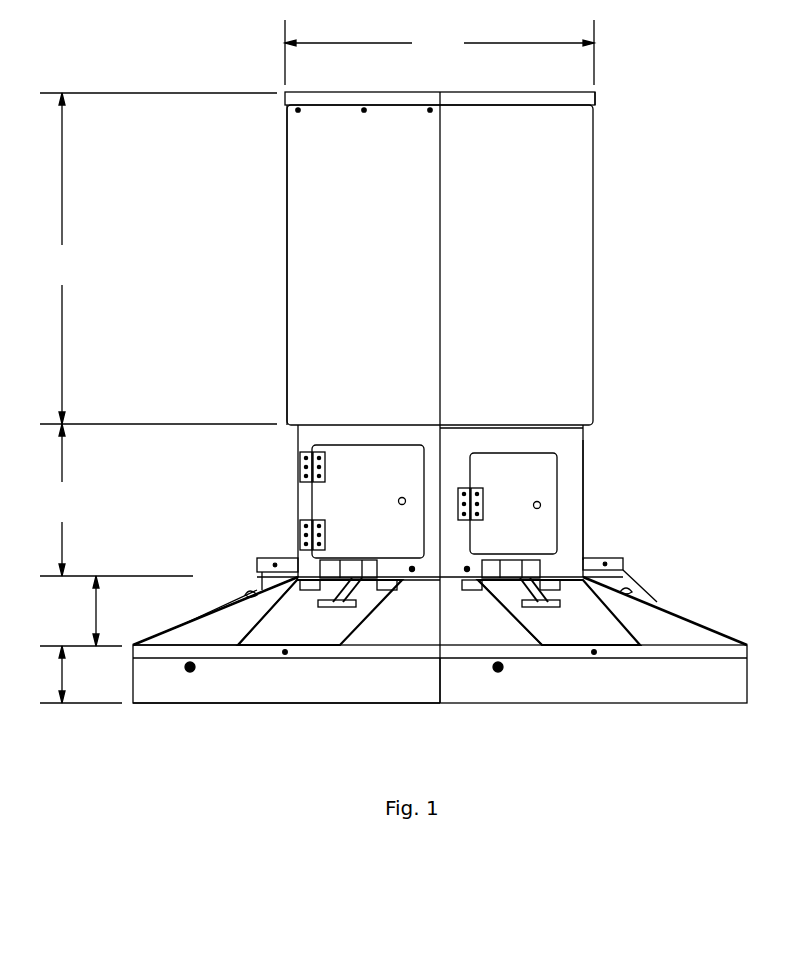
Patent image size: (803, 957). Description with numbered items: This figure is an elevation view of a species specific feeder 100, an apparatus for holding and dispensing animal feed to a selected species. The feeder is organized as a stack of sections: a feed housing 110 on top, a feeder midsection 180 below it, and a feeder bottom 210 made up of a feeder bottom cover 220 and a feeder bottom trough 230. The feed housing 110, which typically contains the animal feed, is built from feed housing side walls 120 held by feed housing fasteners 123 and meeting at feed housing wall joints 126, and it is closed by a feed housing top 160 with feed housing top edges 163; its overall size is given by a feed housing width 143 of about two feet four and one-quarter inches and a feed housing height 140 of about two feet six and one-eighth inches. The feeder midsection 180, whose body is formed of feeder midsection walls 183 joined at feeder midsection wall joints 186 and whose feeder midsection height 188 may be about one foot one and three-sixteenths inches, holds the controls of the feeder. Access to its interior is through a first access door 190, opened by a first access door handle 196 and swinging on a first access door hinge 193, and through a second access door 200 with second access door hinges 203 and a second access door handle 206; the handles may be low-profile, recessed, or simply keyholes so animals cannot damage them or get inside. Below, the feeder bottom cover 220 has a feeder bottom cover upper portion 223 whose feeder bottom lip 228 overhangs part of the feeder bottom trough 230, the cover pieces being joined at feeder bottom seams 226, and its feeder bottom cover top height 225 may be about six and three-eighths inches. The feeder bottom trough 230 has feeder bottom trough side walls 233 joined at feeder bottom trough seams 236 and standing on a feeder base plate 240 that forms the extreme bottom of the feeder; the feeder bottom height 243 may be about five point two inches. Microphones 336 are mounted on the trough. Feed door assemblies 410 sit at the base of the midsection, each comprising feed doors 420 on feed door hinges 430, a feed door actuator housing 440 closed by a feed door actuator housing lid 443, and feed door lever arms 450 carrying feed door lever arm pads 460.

The species specific feeder 100 is at (404, 265).
The feed housing 110 is at (404, 265).
The feed housing side walls 120 is at (286, 350).
The feed housing fasteners 123 is at (298, 112).
The feed housing wall joints 126 is at (441, 215).
The feed housing height 140 is at (158, 258).
The feed housing width 143 is at (439, 52).
The feed housing top 160 is at (462, 105).
The feed housing top edges 163 is at (594, 97).
The feeder midsection 180 is at (544, 501).
The feeder midsection walls 183 is at (560, 437).
The feeder midsection wall joints 186 is at (584, 463).
The feeder midsection height 188 is at (116, 500).
The first access door 190 is at (513, 503).
The first access door hinge 193 is at (462, 487).
The first access door handle 196 is at (534, 508).
The second access door 200 is at (368, 501).
The second access door hinges 203 is at (327, 470).
The second access door handle 206 is at (400, 505).
The feeder bottom 210 is at (205, 622).
The feeder bottom cover 220 is at (338, 612).
The feeder bottom cover upper portion 223 is at (215, 611).
The feeder bottom cover top height 225 is at (92, 614).
The feeder bottom seams 226 is at (440, 628).
The feeder bottom lip 228 is at (285, 655).
The feeder bottom trough 230 is at (440, 674).
The feeder bottom trough side walls 233 is at (213, 700).
The feeder bottom trough seams 236 is at (440, 684).
The feeder base plate 240 is at (300, 703).
The feeder bottom height 243 is at (87, 672).
The microphones 336 is at (190, 672).
The feed door assemblies 410 is at (516, 627).
The feed doors 420 is at (559, 612).
The feed door hinges 430 is at (325, 600).
The feed door actuator housing 440 is at (300, 490).
The feed door actuator housing lid 443 is at (608, 558).
The feed door lever arms 450 is at (626, 570).
The feed door lever arm pads 460 is at (656, 598).